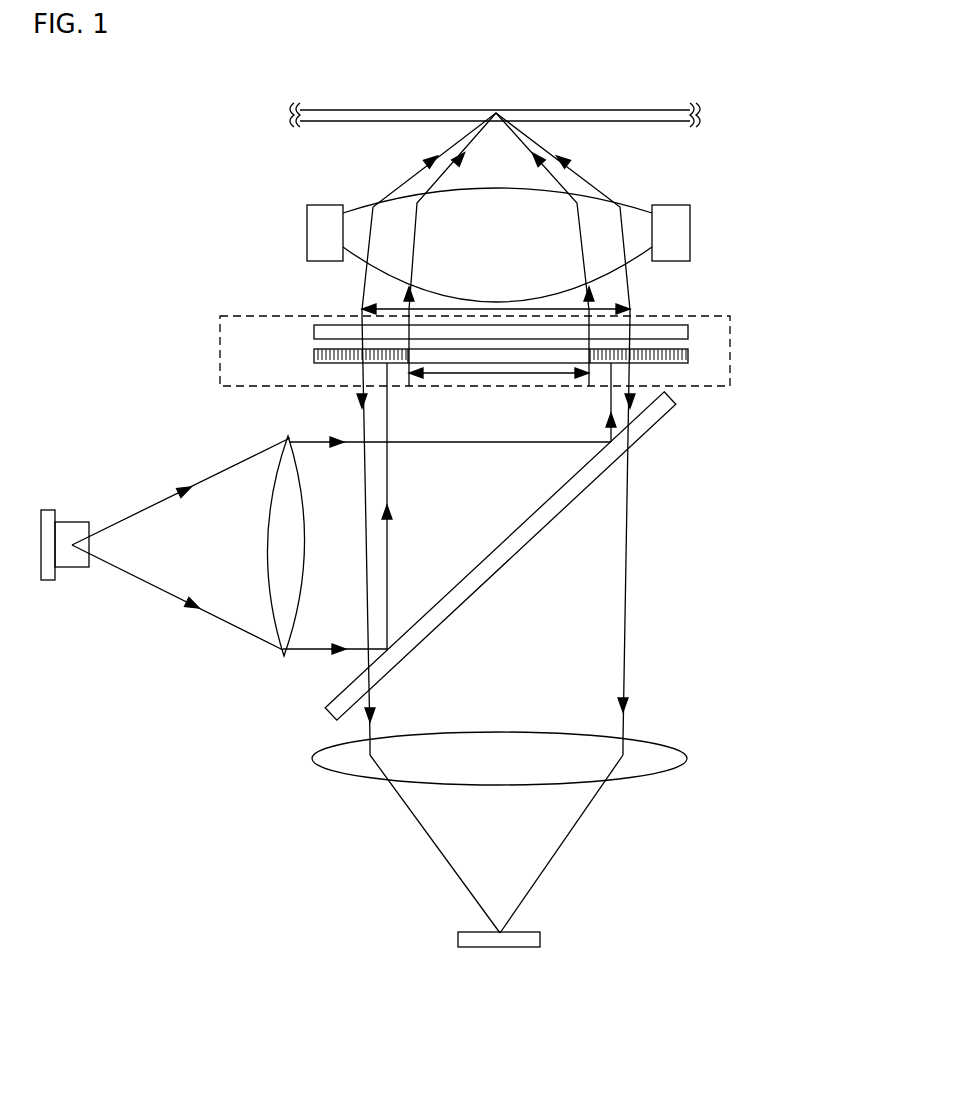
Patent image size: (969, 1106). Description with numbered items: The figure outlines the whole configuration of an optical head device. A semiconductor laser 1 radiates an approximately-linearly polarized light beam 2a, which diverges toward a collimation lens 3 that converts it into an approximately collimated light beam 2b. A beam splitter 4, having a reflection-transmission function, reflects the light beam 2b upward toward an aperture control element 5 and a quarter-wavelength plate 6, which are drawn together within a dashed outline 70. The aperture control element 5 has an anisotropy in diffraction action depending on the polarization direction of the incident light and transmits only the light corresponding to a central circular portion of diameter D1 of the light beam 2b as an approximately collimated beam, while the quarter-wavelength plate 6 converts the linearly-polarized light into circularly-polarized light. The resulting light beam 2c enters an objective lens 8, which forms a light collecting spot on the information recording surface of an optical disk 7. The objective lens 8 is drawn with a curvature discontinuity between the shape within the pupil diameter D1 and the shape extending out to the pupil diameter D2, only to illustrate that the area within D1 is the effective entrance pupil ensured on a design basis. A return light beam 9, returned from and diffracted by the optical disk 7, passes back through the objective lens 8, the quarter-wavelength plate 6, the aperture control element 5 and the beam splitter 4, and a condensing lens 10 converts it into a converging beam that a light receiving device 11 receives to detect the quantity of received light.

The semiconductor laser 1 is at (48, 580).
The approximately-linearly polarized light beam 2a is at (220, 618).
The approximately collimated light beam 2b is at (385, 426).
The light beam passed through aperture control element and quarter-wavelength plate 2c is at (361, 290).
The collimation lens 3 is at (285, 659).
The beam splitter 4 is at (670, 397).
The aperture control element 5 is at (314, 355).
The quarter-wavelength plate 6 is at (314, 330).
The optical disk 7 is at (357, 108).
The objective lens 8 is at (307, 215).
The return light beam 9 is at (595, 189).
The condensing lens 10 is at (687, 758).
The light receiving device 11 is at (540, 940).
The aperture unit 70 is at (731, 350).
The pupil diameter D1 is at (490, 374).
The pupil diameter D2 is at (437, 297).